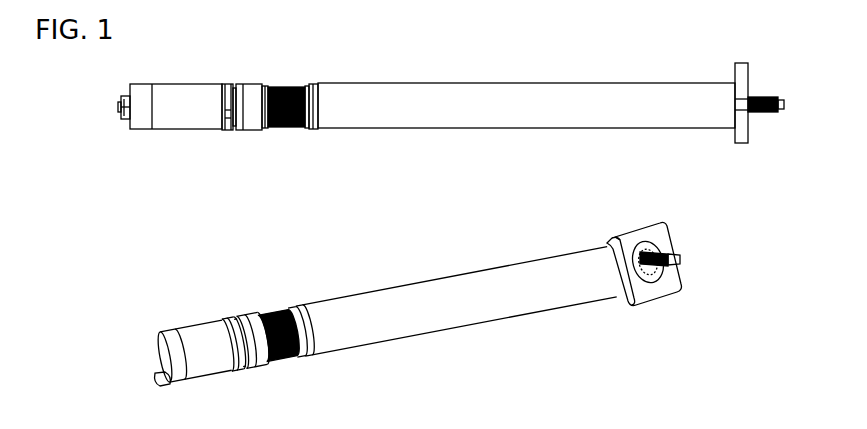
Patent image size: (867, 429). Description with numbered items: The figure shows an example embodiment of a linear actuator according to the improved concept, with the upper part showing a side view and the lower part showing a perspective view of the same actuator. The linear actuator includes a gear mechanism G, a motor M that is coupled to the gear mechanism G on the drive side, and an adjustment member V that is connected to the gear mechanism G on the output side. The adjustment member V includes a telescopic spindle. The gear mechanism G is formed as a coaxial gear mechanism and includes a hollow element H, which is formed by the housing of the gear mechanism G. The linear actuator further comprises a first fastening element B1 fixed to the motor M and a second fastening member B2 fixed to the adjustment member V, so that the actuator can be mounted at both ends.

The first fastening element B1 is at (152, 378).
The motor M is at (205, 332).
The gear mechanism G is at (252, 327).
The hollow element H is at (267, 197).
The adjustment member V is at (433, 121).
The second fastening member B2 is at (767, 120).